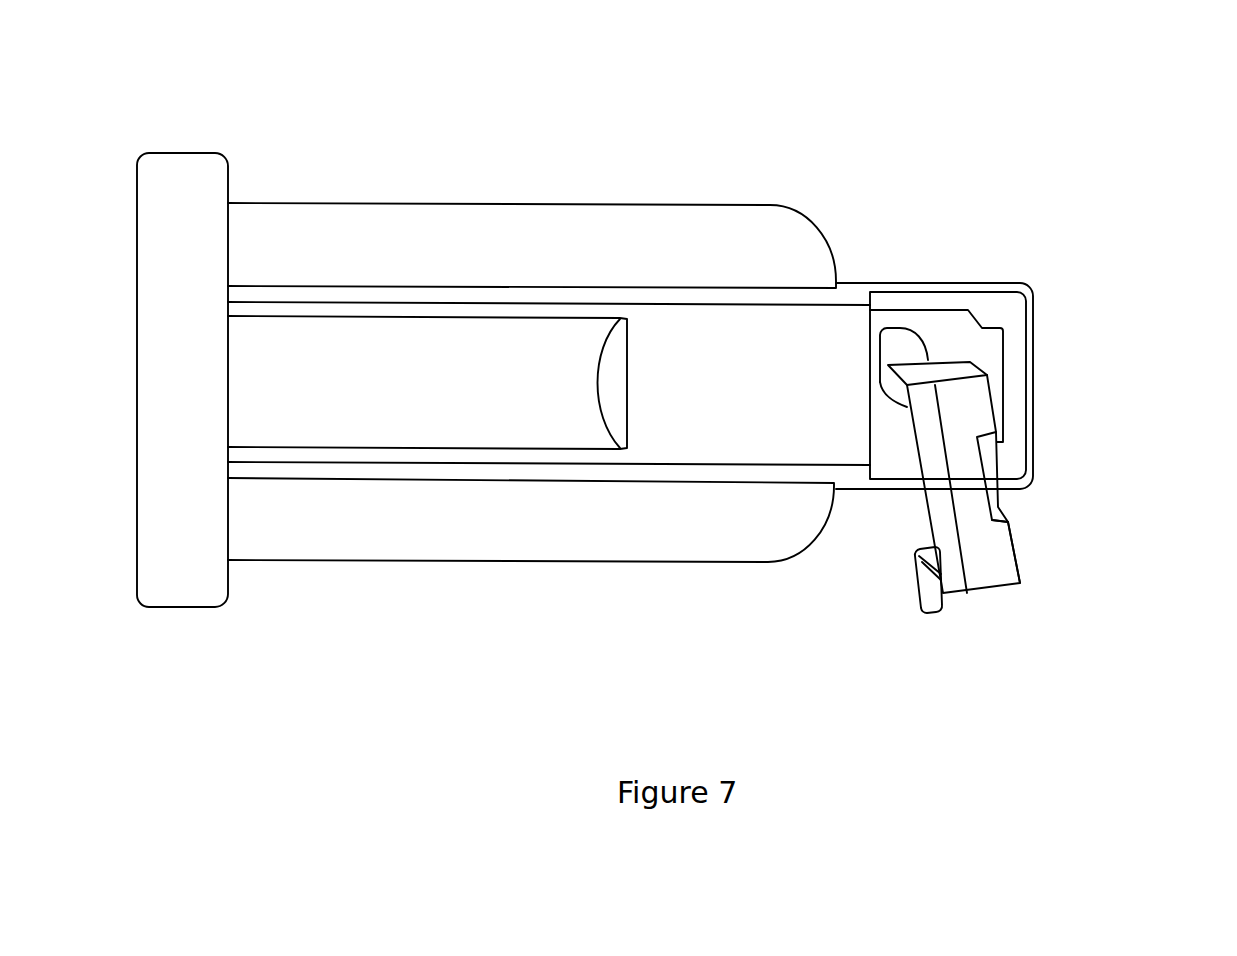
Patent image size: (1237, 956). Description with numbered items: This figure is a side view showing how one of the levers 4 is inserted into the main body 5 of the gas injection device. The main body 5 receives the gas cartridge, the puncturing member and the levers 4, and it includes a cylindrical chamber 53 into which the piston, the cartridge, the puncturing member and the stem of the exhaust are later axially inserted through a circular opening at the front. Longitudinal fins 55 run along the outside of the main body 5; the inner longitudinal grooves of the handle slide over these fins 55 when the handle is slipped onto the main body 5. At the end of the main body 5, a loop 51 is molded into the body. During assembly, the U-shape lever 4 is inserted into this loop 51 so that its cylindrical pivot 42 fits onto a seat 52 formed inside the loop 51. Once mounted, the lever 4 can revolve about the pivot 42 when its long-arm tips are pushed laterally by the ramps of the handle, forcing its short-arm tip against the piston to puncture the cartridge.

The main body 5 is at (177, 610).
The longitudinal fins 55 is at (422, 242).
The cylindrical chamber 53 is at (435, 402).
The loop 51 is at (1020, 413).
The seat 52 is at (973, 317).
The lever 4 is at (960, 596).
The cylindrical pivot 42 is at (1007, 508).